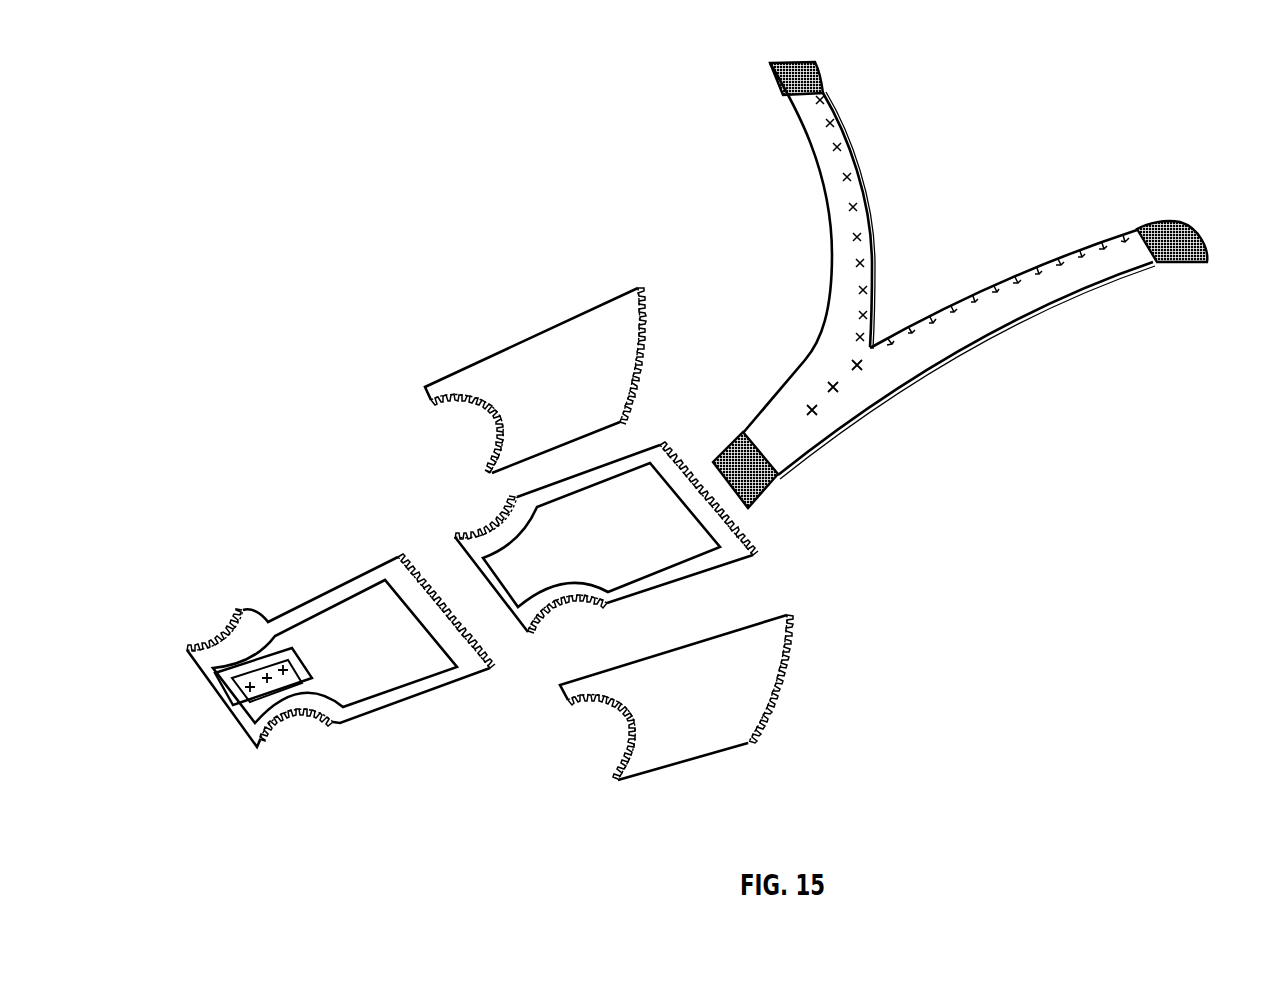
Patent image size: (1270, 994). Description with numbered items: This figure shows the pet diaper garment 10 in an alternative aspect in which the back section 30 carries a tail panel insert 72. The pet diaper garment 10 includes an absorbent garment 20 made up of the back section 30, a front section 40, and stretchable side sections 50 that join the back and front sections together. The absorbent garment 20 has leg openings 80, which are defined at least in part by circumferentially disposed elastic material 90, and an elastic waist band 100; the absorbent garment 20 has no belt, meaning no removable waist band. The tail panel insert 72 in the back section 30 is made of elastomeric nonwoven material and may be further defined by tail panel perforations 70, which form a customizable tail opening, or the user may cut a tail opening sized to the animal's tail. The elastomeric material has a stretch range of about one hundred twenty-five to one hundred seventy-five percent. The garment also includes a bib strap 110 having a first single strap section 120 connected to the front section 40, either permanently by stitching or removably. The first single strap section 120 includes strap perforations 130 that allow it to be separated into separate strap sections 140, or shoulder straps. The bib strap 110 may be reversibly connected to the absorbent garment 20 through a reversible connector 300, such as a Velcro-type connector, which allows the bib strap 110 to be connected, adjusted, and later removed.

The pet diaper garment 10 is at (491, 221).
The absorbent garment 20 is at (488, 729).
The back section 30 is at (345, 610).
The front section 40 is at (707, 585).
The stretchable side sections 50 is at (528, 323).
The tail panel perforations 70 is at (247, 695).
The tail panel insert 72 is at (243, 708).
The leg openings 80 is at (485, 450).
The elastic material 90 is at (474, 426).
The elastic waist band 100 is at (662, 339).
The bib strap 110 is at (1029, 389).
The first single strap section 120 is at (795, 450).
The strap perforations 130 is at (843, 388).
The separate strap sections 140 is at (826, 138).
The reversible connector 300 is at (800, 62).